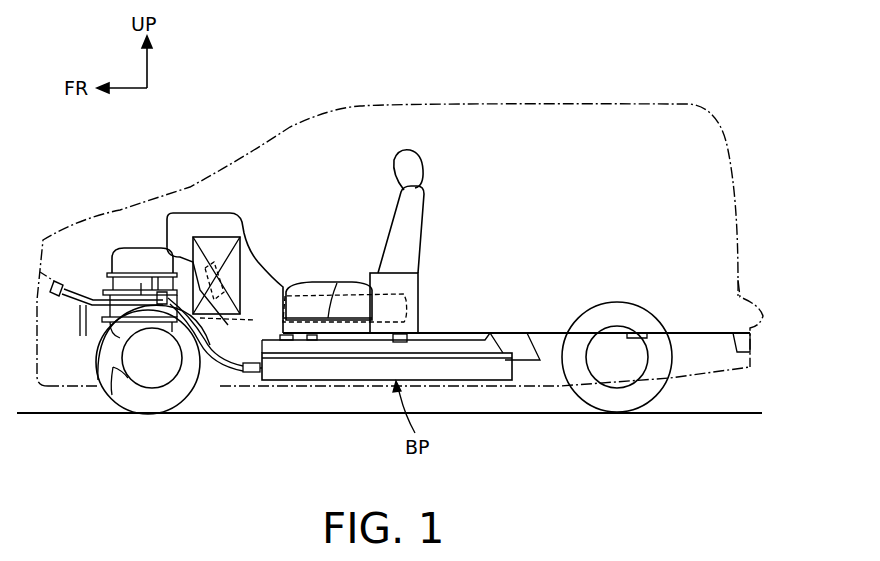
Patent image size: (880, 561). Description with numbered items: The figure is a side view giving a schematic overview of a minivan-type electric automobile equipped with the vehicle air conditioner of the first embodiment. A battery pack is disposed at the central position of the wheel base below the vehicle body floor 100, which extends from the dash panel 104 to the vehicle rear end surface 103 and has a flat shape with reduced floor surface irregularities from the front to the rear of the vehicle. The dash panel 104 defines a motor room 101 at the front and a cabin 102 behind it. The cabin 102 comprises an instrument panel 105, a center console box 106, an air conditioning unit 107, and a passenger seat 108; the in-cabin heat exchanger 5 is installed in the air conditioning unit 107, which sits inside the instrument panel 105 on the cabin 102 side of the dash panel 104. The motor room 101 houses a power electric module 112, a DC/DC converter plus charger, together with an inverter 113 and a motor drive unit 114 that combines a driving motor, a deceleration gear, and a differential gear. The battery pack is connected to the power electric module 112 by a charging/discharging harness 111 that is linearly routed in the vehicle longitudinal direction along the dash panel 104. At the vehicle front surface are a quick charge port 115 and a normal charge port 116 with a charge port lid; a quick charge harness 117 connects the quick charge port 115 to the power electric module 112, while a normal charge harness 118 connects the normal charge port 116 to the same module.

The vehicle body floor 100 is at (505, 333).
The motor room 101 is at (82, 380).
The cabin 102 is at (353, 188).
The vehicle rear end surface 103 is at (736, 285).
The dash panel 104 is at (192, 258).
The instrument panel 105 is at (243, 222).
The center console box 106 is at (338, 282).
The air conditioning unit 107 is at (243, 278).
The passenger seat 108 is at (424, 214).
The charging/discharging harness 111 is at (208, 377).
The power electric module 112 is at (127, 248).
The inverter 113 is at (141, 283).
The motor drive unit 114 is at (113, 367).
The quick charge port 115 is at (48, 279).
The normal charge port 116 is at (84, 304).
The quick charge harness 117 is at (82, 313).
The normal charge harness 118 is at (152, 334).
The in-cabin heat exchanger 5 is at (234, 320).